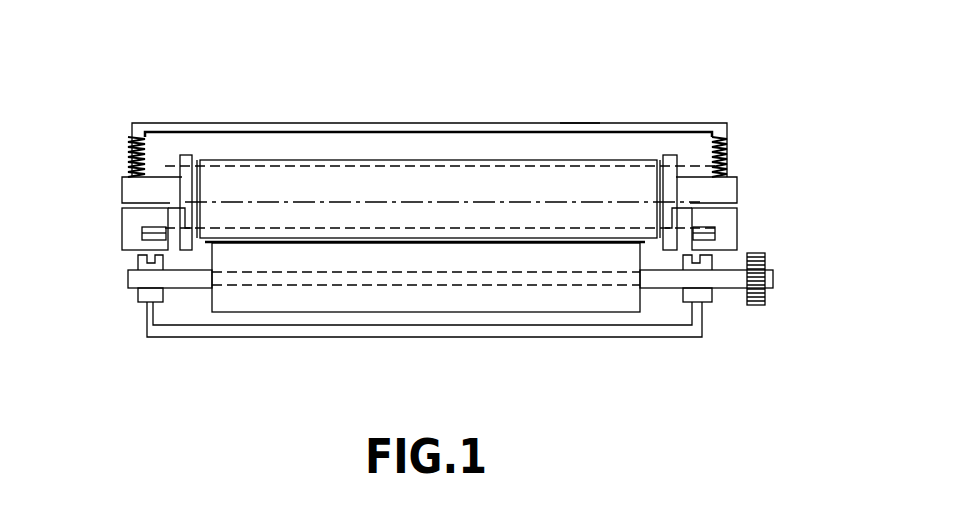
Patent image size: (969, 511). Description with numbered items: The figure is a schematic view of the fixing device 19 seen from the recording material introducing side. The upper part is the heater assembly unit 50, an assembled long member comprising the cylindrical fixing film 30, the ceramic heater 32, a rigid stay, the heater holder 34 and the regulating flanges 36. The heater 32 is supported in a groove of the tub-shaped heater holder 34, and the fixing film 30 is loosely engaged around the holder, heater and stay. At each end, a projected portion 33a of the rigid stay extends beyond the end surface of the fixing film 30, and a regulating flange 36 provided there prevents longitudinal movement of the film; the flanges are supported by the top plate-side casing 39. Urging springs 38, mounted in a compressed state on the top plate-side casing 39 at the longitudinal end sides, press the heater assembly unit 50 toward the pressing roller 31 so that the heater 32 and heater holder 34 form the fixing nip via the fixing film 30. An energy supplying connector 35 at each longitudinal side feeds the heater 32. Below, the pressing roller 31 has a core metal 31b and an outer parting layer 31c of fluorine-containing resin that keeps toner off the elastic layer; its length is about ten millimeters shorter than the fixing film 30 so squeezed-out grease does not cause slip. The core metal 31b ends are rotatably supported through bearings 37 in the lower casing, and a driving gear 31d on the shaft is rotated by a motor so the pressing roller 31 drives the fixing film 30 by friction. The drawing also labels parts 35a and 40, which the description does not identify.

The fixing device 19 is at (248, 122).
The fixing film 30 is at (358, 160).
The pressing roller 31 is at (463, 313).
The core metal 31b is at (137, 289).
The parting layer 31c is at (370, 300).
The driving gear 31d is at (767, 292).
The ceramic heater 32 is at (168, 243).
The projected portion 33a is at (128, 188).
The heater holder 34 is at (518, 166).
The energy supplying connector 35 is at (140, 216).
The bearing 35a is at (155, 240).
The regulating flange 36 is at (182, 152).
The bearings 37 is at (138, 300).
The urging springs 38 is at (130, 150).
The top plate-side casing 39 is at (278, 128).
The lower frame 40 is at (568, 330).
The heater assembly unit 50 is at (580, 122).